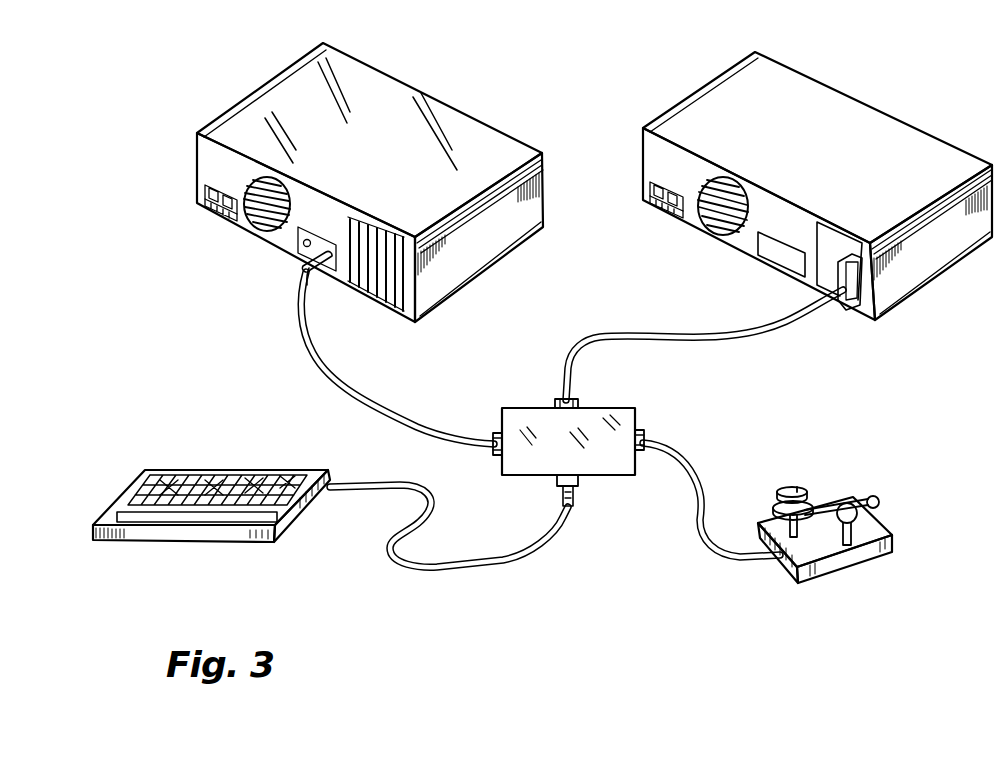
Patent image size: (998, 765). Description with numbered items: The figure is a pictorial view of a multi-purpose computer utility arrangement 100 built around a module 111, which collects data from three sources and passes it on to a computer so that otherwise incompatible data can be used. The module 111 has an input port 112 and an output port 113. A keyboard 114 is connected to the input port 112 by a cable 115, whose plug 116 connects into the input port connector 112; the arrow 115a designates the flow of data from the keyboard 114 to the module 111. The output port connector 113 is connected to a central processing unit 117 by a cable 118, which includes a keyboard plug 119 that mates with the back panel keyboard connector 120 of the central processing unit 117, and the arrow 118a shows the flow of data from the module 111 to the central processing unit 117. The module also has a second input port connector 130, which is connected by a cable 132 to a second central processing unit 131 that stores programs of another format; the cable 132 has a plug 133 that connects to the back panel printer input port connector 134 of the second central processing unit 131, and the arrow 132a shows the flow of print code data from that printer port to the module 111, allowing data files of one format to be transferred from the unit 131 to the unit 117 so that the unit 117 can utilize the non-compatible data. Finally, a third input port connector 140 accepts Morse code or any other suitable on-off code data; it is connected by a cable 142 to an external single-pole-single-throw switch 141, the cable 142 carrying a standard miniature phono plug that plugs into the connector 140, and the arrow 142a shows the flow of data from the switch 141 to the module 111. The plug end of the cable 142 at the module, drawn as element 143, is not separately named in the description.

The multi-purpose computer utility arrangement 100 is at (524, 398).
The module 111 is at (540, 446).
The input port 112 is at (582, 480).
The output port 113 is at (498, 458).
The keyboard 114 is at (302, 524).
The cable 115 is at (540, 556).
The arrow 115a is at (514, 545).
The plug 116 is at (561, 492).
The central processing unit 117 is at (399, 96).
The cable 118 is at (321, 368).
The arrow 118a is at (466, 380).
The keyboard plug 119 is at (305, 263).
The back panel keyboard connector 120 is at (318, 236).
The second input port connector 130 is at (582, 403).
The second central processing unit 131 is at (695, 108).
The cable 132 is at (753, 347).
The arrow 132a is at (726, 288).
The plug 133 is at (853, 310).
The back panel printer input port connector 134 is at (856, 235).
The third input port connector 140 is at (640, 428).
The single-pole-single-throw switch 141 is at (863, 574).
The cable 142 is at (707, 487).
The arrow 142a is at (689, 496).
The key cable connector 143 is at (658, 443).